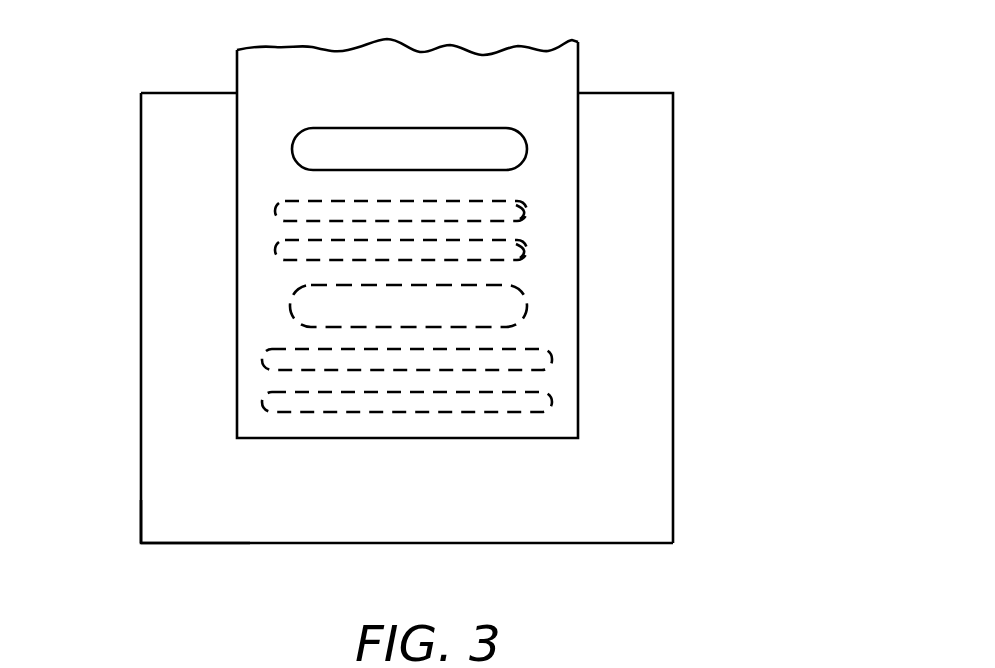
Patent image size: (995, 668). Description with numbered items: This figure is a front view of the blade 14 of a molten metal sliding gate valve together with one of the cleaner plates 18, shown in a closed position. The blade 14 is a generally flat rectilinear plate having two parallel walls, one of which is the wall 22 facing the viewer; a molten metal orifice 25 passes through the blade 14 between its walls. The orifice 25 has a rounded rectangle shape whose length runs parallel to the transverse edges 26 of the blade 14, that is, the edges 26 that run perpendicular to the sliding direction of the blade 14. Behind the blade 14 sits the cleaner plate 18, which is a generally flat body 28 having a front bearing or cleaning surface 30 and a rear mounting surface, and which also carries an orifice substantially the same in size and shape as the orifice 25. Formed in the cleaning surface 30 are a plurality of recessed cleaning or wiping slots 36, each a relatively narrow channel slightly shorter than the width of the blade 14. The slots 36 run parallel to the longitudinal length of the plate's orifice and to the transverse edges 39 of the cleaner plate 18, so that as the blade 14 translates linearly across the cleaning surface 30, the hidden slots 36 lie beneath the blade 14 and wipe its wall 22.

The blade 14 is at (555, 67).
The cleaner plate 18 is at (658, 233).
The wall 22 is at (477, 249).
The molten metal orifice 25 is at (418, 129).
The transverse edge 26 is at (543, 333).
The flat body 28 is at (140, 463).
The cleaning surface 30 is at (248, 528).
The cleaning slot 36 is at (530, 252).
The transverse edge 39 is at (368, 546).